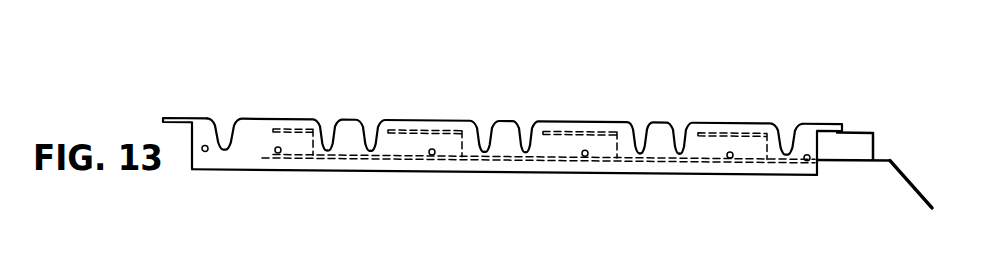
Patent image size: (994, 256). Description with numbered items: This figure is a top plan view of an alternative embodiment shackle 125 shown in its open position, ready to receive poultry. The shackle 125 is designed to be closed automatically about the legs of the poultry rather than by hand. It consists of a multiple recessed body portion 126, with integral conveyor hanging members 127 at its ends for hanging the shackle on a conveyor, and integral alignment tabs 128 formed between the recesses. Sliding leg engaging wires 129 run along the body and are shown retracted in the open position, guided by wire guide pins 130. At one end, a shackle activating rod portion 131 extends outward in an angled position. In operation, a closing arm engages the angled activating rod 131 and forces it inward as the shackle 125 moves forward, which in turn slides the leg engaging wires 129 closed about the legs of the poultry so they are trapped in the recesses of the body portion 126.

The shackle 125 is at (263, 99).
The multiple recessed body portion 126 is at (395, 158).
The integral conveyor hanging members 127 is at (173, 117).
The integral alignment tabs 128 is at (350, 118).
The sliding leg engaging wires 129 is at (428, 93).
The wire guide pins 130 is at (205, 151).
The shackle activating rod portion 131 is at (914, 186).